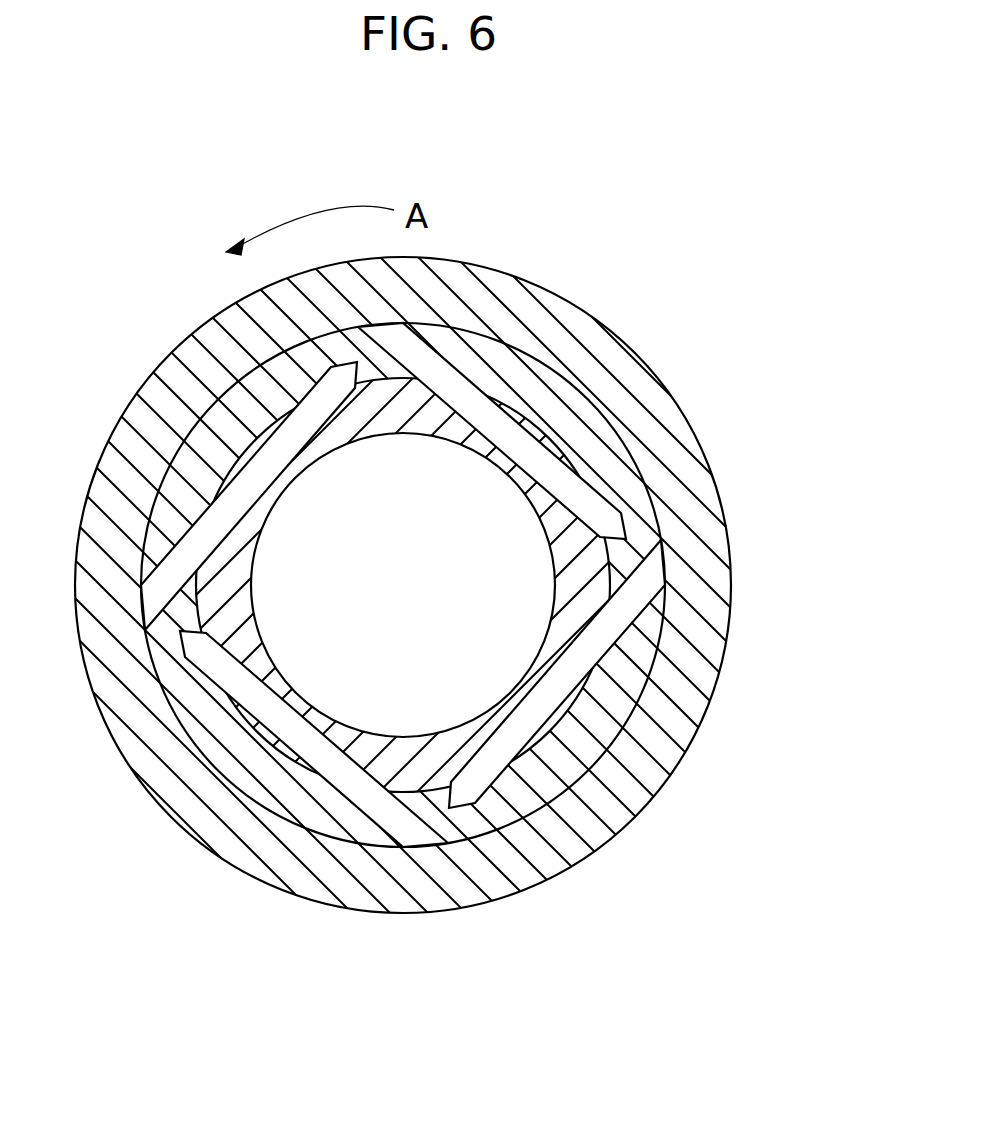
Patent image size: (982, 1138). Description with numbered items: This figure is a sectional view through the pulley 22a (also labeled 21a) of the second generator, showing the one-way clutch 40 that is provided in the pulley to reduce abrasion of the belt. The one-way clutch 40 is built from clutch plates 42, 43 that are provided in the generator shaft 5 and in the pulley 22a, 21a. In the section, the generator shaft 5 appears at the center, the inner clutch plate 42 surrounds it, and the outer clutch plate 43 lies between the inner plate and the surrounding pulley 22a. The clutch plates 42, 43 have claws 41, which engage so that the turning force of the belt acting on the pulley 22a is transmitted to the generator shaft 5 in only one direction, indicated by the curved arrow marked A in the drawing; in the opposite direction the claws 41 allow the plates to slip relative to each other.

The pulley 22a is at (636, 370).
The inner peripheral surface of housing 21a is at (482, 585).
The one-way clutch 40 is at (670, 536).
The claws 41 is at (556, 732).
The clutch plate 42 is at (532, 655).
The clutch plate 43 is at (642, 640).
The generator shaft 5 is at (380, 714).